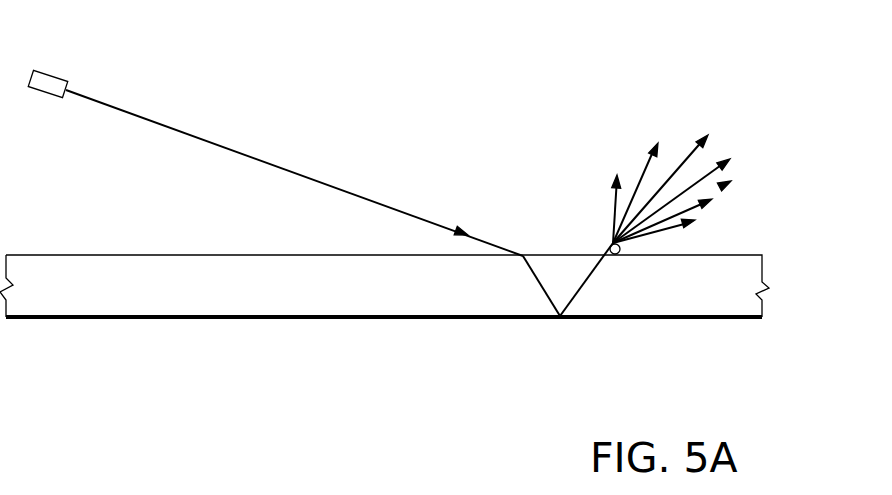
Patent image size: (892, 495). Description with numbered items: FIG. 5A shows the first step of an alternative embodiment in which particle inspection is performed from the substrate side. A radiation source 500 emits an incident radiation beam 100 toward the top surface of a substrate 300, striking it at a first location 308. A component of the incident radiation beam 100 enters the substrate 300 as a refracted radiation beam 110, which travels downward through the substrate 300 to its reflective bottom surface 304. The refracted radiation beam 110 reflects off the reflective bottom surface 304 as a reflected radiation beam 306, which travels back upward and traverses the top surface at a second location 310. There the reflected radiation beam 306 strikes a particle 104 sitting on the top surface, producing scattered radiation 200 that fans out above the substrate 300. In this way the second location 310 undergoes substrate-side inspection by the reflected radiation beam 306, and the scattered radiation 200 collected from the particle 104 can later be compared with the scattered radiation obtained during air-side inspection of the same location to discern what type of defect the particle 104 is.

The incident radiation beam 100 is at (295, 171).
The particle 104 is at (622, 249).
The refracted radiation beam 110 is at (543, 290).
The scattered radiation 200 is at (725, 190).
The substrate 300 is at (249, 292).
The reflective bottom surface 304 is at (183, 319).
The reflected radiation beam 306 is at (580, 290).
The first location 308 is at (505, 261).
The second location 310 is at (610, 269).
The radiation source 500 is at (55, 72).